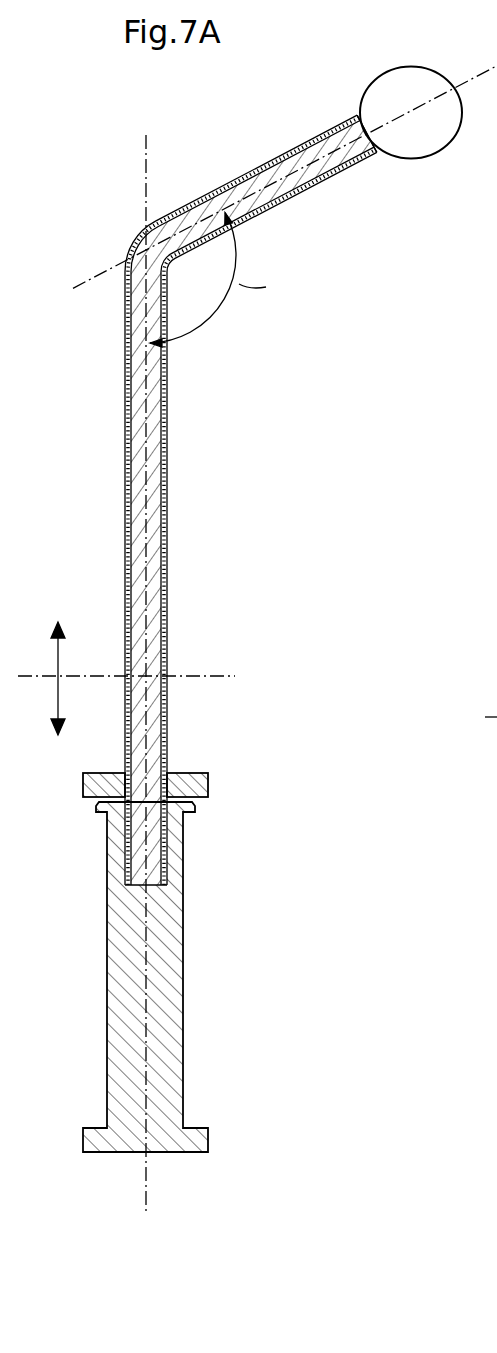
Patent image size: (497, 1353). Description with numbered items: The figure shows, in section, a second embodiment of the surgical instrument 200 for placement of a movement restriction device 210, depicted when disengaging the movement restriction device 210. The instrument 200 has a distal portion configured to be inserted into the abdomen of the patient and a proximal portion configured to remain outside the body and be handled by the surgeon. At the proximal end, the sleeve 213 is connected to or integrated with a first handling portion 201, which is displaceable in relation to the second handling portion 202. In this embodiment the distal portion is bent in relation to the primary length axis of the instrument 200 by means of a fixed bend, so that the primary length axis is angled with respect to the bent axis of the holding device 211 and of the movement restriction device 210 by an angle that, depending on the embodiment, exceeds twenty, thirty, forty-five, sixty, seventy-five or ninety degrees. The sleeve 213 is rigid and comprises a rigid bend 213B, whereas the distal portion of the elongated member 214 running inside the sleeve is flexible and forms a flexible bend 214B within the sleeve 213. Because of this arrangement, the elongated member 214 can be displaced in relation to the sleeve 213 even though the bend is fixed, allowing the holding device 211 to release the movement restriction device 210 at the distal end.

The surgical instrument 200 is at (120, 182).
The first handling portion 201 is at (210, 786).
The second handling portion 202 is at (183, 973).
The movement restriction device 210 is at (403, 75).
The holding device 211 is at (374, 128).
The sleeve 213 is at (121, 403).
The rigid bend 213B is at (146, 240).
The elongated member 214 is at (147, 515).
The flexible bend 214B is at (172, 268).